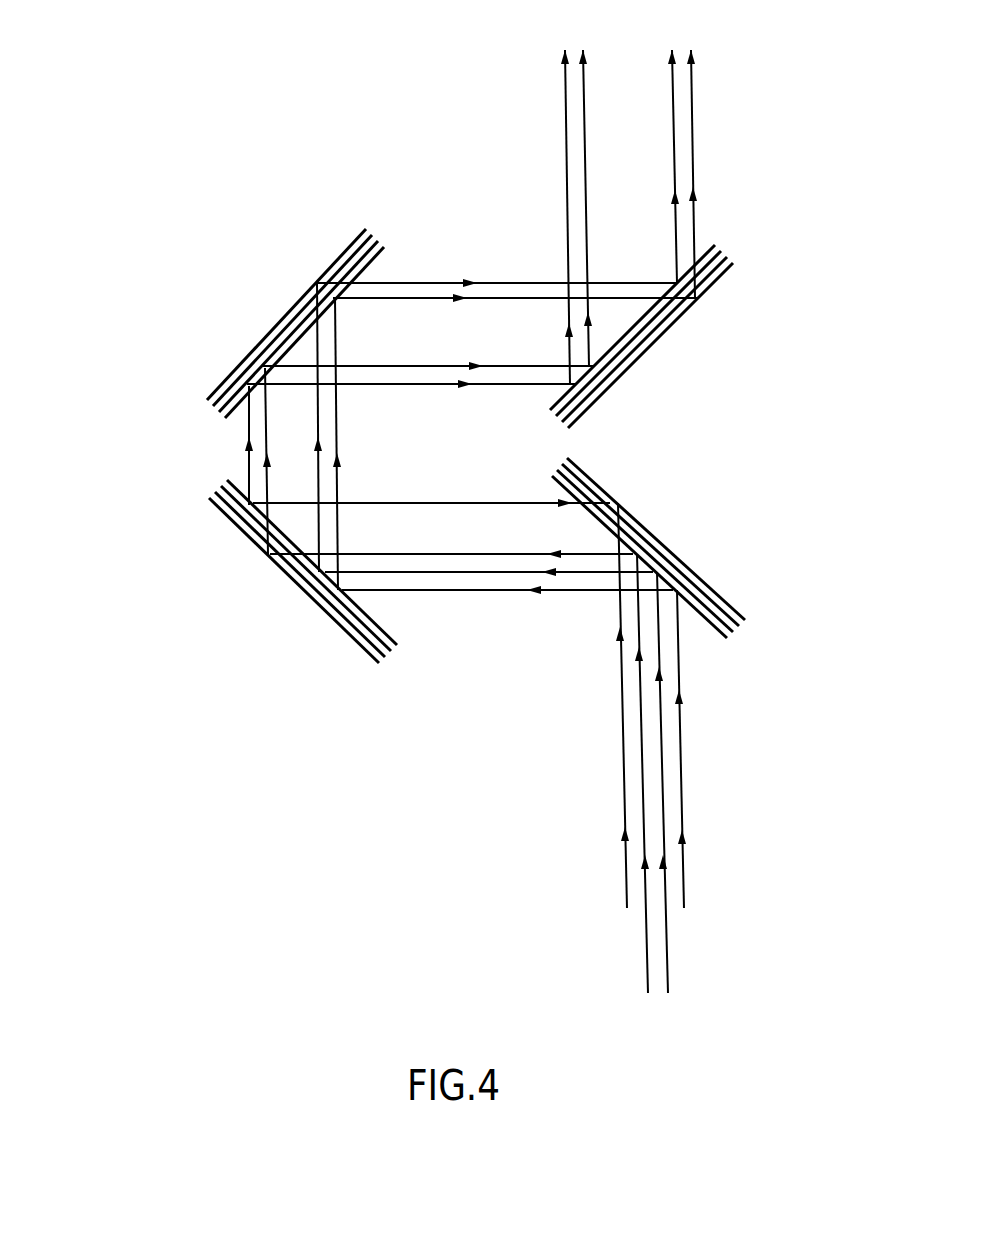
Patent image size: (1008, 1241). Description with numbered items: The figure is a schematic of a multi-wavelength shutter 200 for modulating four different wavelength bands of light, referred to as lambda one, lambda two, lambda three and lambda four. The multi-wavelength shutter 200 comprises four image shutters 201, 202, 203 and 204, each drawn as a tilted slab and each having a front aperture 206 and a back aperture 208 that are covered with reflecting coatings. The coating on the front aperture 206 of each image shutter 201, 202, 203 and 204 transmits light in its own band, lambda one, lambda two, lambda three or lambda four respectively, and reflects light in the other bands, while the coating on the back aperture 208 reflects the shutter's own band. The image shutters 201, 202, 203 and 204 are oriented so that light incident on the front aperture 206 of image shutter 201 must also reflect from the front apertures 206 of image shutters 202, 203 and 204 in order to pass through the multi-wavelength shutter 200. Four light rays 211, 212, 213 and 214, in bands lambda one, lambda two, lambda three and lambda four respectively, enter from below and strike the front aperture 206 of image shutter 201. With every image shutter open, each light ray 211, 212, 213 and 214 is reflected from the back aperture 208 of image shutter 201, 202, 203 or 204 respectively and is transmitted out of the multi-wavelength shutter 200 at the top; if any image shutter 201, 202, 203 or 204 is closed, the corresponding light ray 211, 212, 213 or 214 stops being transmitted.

The multi-wavelength shutter 200 is at (193, 113).
The image shutter 201 is at (733, 582).
The image shutter 202 is at (250, 557).
The image shutter 203 is at (233, 320).
The image shutter 204 is at (735, 294).
The front aperture 206 is at (370, 263).
The back aperture 208 is at (288, 313).
The light ray 211 is at (627, 880).
The light ray 212 is at (648, 970).
The light ray 213 is at (668, 967).
The light ray 214 is at (683, 880).